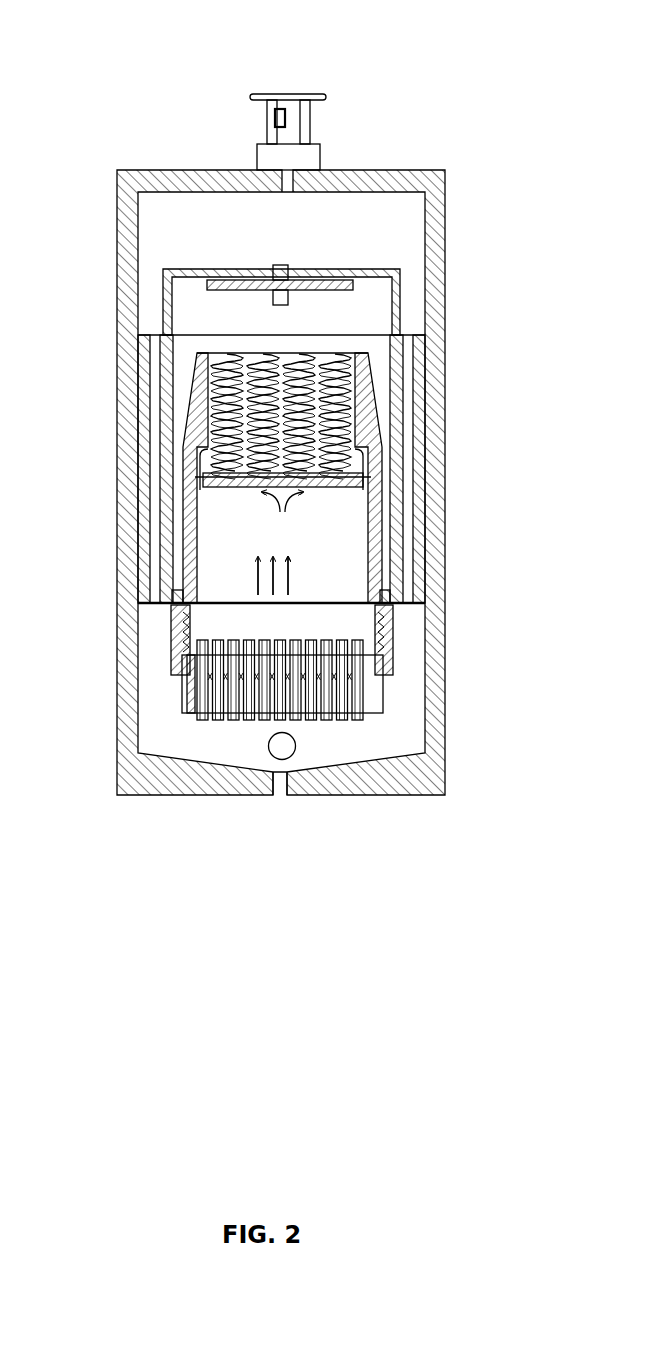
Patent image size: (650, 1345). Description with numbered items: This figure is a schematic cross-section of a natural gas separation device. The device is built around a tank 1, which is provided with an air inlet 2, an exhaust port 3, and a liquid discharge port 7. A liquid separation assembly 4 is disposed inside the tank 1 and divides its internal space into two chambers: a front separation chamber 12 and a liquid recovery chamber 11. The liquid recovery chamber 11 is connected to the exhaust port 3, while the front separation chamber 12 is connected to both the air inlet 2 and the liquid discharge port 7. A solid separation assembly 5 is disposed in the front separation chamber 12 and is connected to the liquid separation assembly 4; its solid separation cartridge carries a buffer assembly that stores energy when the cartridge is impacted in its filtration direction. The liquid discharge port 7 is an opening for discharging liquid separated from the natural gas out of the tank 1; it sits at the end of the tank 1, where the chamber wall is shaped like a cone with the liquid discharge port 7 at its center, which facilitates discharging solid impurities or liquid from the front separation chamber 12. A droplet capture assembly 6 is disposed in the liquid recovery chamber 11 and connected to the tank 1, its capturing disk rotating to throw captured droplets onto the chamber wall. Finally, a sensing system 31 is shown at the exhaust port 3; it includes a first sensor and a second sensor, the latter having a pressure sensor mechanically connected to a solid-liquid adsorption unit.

The tank 1 is at (118, 292).
The air inlet 2 is at (282, 748).
The exhaust port 3 is at (308, 122).
The sensing system 31 is at (270, 115).
The liquid separation assembly 4 is at (417, 333).
The solid separation assembly 5 is at (390, 652).
The droplet capture assembly 6 is at (353, 285).
The liquid discharge port 7 is at (282, 797).
The liquid recovery chamber 11 is at (192, 220).
The front separation chamber 12 is at (402, 727).